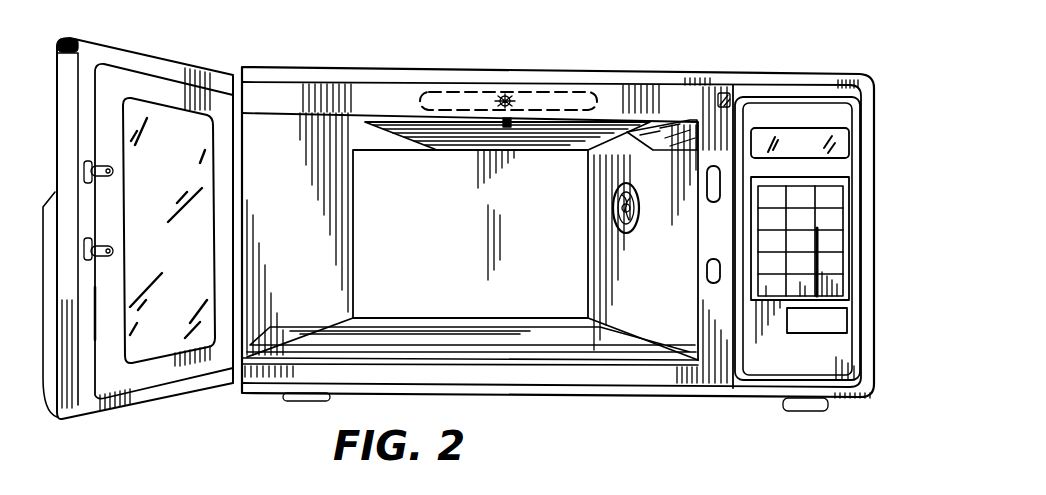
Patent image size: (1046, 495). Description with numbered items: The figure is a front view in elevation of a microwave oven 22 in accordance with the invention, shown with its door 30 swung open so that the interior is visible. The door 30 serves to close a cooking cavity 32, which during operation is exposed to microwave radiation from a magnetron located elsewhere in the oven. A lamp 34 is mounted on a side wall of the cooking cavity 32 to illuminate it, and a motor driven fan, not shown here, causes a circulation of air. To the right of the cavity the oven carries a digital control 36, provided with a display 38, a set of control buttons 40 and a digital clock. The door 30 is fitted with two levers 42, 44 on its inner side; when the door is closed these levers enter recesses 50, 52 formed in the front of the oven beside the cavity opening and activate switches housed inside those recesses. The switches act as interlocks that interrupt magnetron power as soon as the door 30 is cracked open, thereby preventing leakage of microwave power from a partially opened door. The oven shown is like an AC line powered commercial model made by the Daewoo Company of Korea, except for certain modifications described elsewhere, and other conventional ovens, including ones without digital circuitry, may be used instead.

The microwave oven 22 is at (662, 75).
The door 30 is at (167, 65).
The cooking cavity 32 is at (479, 251).
The lamp 34 is at (612, 208).
The digital control 36 is at (724, 100).
The display 38 is at (807, 143).
The control buttons 40 is at (853, 244).
The lever 42 is at (114, 169).
The lever 44 is at (114, 252).
The recess 50 is at (712, 195).
The recess 52 is at (708, 270).